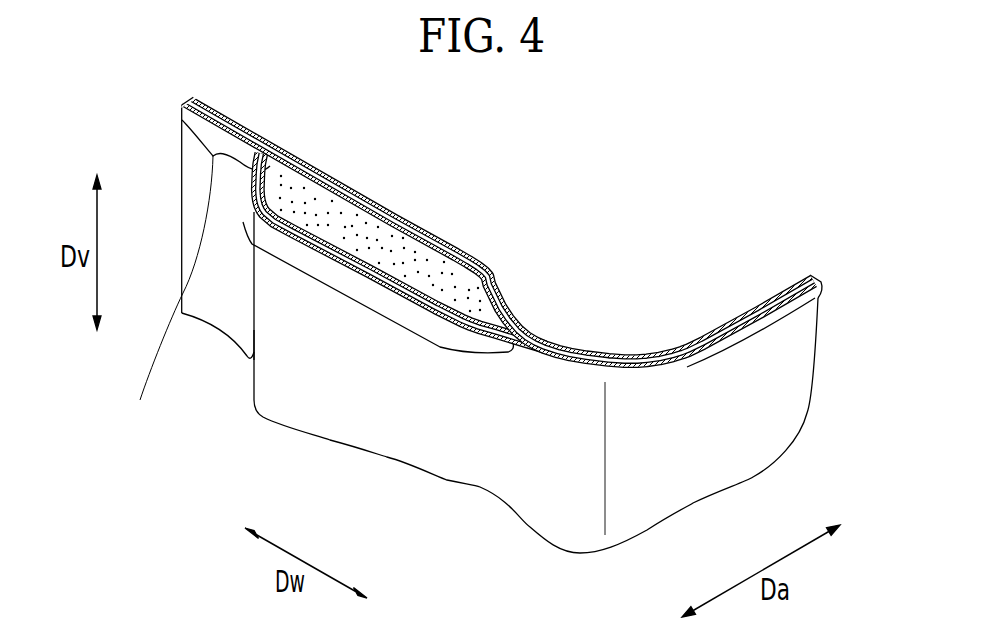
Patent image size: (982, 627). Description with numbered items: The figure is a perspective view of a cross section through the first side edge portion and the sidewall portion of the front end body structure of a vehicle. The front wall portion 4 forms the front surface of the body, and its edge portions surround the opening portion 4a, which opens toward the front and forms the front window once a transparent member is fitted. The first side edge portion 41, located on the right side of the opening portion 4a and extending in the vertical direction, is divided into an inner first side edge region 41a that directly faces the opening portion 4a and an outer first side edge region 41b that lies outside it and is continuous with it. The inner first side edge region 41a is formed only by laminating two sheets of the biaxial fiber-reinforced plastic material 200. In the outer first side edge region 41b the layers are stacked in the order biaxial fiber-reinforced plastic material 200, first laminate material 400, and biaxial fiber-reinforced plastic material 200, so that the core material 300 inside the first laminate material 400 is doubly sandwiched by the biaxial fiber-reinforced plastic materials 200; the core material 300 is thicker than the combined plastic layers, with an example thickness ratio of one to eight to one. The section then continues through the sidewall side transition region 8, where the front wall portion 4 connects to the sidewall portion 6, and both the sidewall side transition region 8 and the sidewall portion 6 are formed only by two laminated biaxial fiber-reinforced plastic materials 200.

The front wall portion 4 is at (393, 435).
The opening portion 4a is at (182, 259).
The first side edge portion 41 is at (232, 438).
The inner first side edge region 41a is at (165, 300).
The outer first side edge region 41b is at (253, 333).
The sidewall portion 6 is at (806, 300).
The sidewall side transition region 8 is at (682, 355).
The biaxial fiber-reinforced plastic material 200 is at (368, 203).
The core material 300 is at (388, 240).
The first laminate material 400 is at (501, 274).